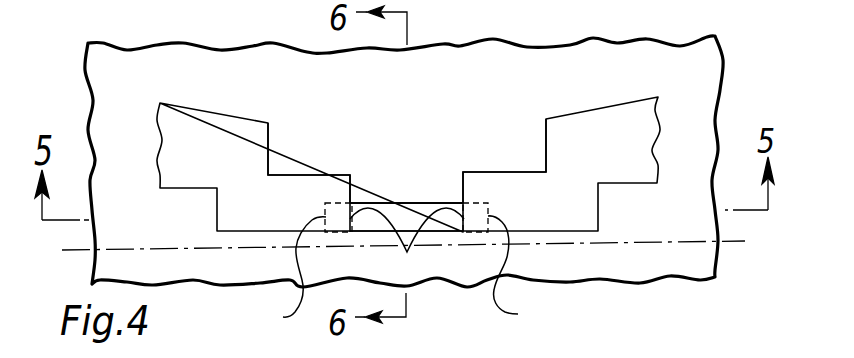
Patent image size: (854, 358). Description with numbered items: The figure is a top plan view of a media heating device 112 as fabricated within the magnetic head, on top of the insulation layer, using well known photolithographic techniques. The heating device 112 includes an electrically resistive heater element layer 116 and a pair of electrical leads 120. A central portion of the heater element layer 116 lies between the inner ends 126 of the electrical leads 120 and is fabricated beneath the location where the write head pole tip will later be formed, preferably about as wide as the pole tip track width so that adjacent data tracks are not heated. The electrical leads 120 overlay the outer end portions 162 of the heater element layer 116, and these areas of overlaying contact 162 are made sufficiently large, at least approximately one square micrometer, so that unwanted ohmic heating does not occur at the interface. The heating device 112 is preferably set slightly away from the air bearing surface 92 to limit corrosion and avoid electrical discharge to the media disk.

The air bearing surface 92 is at (726, 244).
The heating device 112 is at (388, 119).
The heater element layer 116 is at (398, 215).
The electrical leads 120 is at (287, 217).
The inner ends 126 is at (406, 241).
The outer end portions 162 is at (400, 278).